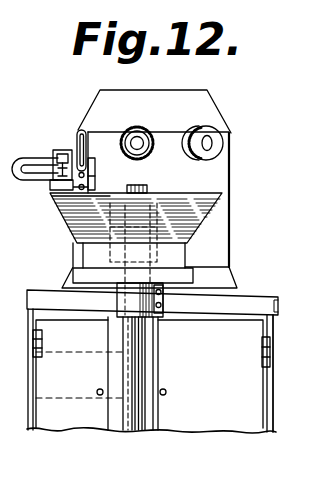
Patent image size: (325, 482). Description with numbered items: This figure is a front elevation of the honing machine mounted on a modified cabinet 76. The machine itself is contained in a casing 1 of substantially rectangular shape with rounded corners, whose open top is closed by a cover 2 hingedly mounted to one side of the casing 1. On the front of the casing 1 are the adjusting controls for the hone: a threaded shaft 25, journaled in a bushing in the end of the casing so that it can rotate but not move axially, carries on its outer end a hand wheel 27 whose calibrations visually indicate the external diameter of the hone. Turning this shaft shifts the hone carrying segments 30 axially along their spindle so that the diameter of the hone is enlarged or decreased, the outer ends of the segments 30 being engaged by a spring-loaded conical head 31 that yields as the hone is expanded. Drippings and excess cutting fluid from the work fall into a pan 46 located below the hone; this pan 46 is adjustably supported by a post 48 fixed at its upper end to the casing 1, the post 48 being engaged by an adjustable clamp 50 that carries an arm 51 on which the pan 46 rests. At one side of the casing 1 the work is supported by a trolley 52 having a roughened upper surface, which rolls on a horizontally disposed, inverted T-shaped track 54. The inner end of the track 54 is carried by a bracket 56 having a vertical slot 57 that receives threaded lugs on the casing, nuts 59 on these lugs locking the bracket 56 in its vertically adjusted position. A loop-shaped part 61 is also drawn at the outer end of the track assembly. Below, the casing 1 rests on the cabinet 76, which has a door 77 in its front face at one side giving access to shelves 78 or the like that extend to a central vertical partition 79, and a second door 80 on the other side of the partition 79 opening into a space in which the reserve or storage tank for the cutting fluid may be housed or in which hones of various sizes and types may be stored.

The casing 1 is at (220, 180).
The cover 2 is at (167, 104).
The threaded shaft 25 is at (208, 138).
The hand wheel 27 is at (218, 153).
The hone carrying segments 30 is at (135, 129).
The conical head 31 is at (141, 140).
The pan 46 is at (170, 208).
The post 48 is at (147, 367).
The adjustable clamp 50 is at (132, 300).
The arm 51 is at (83, 276).
The trolley 52 is at (56, 150).
The track 54 is at (52, 177).
The bracket 56 is at (93, 181).
The slot 57 is at (77, 142).
The nuts 59 is at (75, 194).
The loop handle 61 is at (33, 159).
The cabinet 76 is at (272, 426).
The door 77 is at (106, 419).
The shelves 78 is at (80, 354).
The central vertical partition 79 is at (130, 421).
The door 80 is at (207, 421).